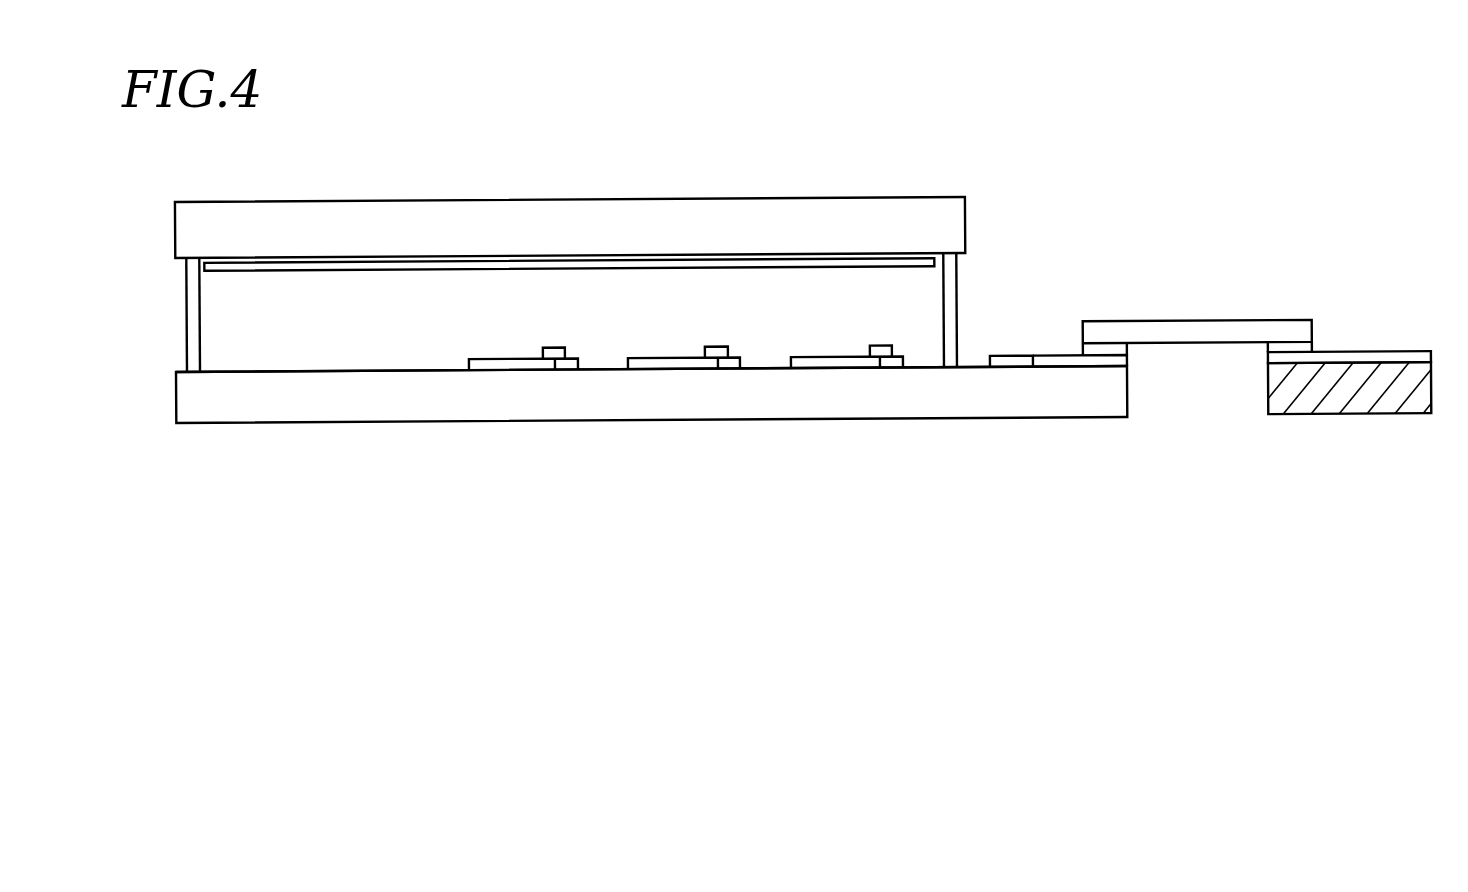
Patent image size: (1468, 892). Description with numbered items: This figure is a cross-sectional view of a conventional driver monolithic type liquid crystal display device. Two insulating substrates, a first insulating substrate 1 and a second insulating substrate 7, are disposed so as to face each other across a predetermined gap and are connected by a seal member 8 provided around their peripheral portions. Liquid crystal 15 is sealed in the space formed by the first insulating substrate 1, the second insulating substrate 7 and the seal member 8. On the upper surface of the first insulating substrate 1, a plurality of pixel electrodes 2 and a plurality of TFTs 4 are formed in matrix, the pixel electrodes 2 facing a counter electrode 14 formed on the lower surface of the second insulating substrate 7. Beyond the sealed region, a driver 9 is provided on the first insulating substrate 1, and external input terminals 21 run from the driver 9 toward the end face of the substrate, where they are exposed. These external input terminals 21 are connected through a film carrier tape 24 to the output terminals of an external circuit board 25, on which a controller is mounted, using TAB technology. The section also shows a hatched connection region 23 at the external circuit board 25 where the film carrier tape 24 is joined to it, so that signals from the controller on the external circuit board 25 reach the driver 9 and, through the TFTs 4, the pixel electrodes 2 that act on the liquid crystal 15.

The first insulating substrate 1 is at (570, 399).
The pixel electrode 2 is at (677, 370).
The TFT 4 is at (726, 371).
The second insulating substrate 7 is at (437, 227).
The seal member 8 is at (195, 347).
The driver 9 is at (1017, 362).
The counter electrode 14 is at (628, 261).
The liquid crystal 15 is at (368, 343).
The external input terminal 21 is at (1068, 364).
The connection electrode 23 is at (1308, 357).
The film carrier tape 24 is at (1193, 334).
The external circuit board 25 is at (1338, 404).